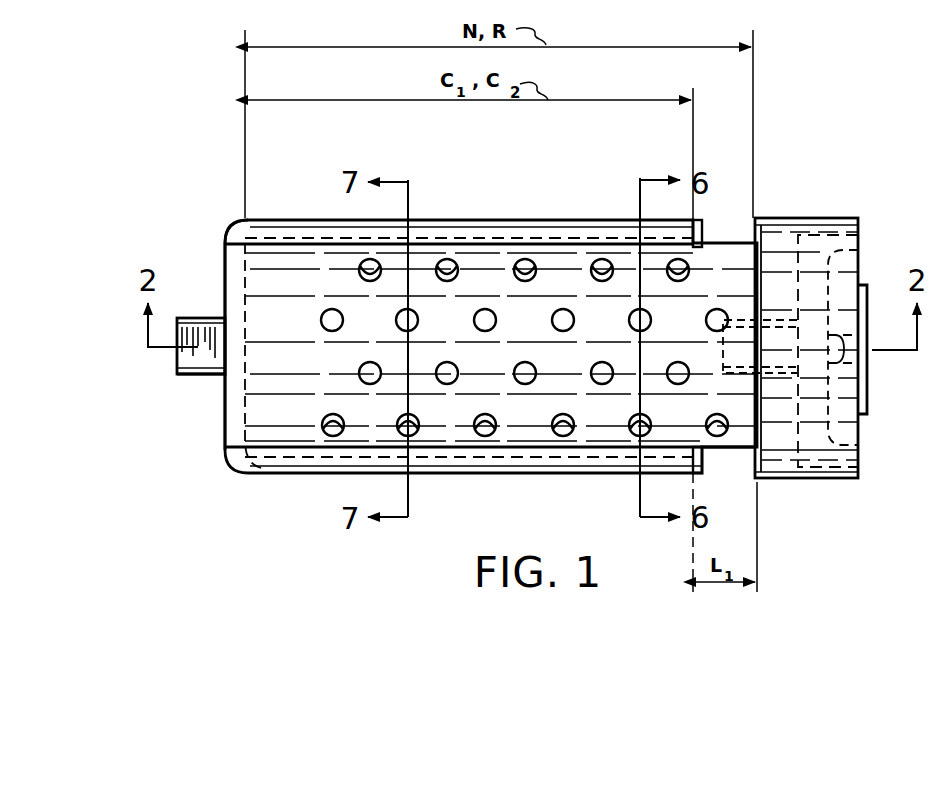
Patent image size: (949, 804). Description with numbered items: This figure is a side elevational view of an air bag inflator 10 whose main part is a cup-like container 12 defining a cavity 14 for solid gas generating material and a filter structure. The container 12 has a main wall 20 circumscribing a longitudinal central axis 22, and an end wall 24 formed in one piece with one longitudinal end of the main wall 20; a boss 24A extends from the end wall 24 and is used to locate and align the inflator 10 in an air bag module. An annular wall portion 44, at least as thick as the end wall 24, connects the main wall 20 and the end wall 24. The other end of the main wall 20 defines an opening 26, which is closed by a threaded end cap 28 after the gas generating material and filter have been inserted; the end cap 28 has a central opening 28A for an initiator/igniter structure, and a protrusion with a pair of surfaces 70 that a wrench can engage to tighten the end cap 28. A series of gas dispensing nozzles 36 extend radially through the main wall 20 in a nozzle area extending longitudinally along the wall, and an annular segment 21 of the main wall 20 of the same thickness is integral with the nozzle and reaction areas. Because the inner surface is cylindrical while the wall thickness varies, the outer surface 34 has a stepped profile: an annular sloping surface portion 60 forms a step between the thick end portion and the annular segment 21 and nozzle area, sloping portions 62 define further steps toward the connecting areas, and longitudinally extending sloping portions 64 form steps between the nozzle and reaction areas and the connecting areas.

The inflator 10 is at (771, 157).
The container 12 is at (525, 192).
The cavity 14 is at (300, 402).
The main wall 20 is at (470, 463).
The annular segment 21 is at (728, 452).
The longitudinal central axis 22 is at (195, 357).
The end wall 24 is at (236, 297).
The boss 24A is at (196, 382).
The opening 26 is at (813, 266).
The end cap 28 is at (830, 234).
The central opening 28A is at (811, 340).
The outer surface 34 is at (498, 217).
The gas dispensing nozzles 36 is at (364, 259).
The annular wall portion 44 is at (240, 234).
The sloping surface portion 60 is at (778, 265).
The sloping portions 62 is at (695, 215).
The additional sloping portions 64 is at (557, 243).
The surfaces 70 is at (863, 287).